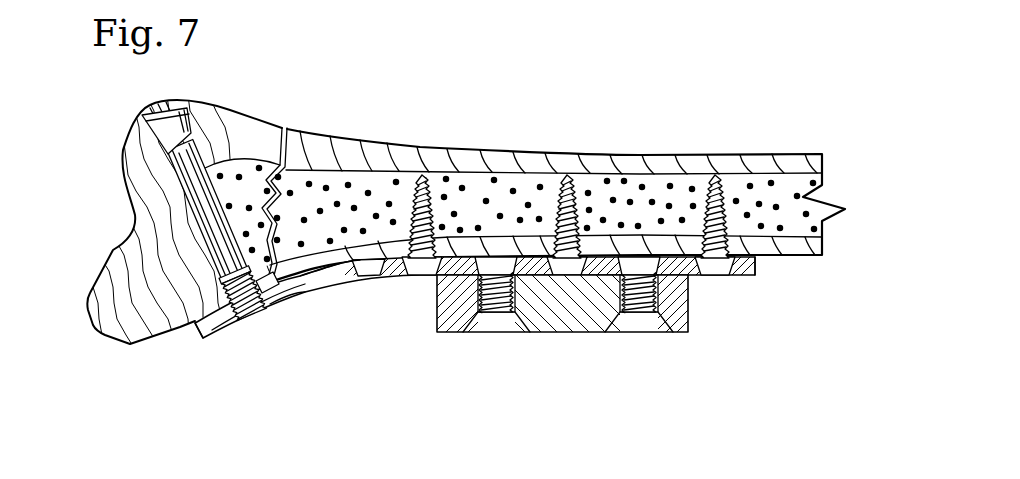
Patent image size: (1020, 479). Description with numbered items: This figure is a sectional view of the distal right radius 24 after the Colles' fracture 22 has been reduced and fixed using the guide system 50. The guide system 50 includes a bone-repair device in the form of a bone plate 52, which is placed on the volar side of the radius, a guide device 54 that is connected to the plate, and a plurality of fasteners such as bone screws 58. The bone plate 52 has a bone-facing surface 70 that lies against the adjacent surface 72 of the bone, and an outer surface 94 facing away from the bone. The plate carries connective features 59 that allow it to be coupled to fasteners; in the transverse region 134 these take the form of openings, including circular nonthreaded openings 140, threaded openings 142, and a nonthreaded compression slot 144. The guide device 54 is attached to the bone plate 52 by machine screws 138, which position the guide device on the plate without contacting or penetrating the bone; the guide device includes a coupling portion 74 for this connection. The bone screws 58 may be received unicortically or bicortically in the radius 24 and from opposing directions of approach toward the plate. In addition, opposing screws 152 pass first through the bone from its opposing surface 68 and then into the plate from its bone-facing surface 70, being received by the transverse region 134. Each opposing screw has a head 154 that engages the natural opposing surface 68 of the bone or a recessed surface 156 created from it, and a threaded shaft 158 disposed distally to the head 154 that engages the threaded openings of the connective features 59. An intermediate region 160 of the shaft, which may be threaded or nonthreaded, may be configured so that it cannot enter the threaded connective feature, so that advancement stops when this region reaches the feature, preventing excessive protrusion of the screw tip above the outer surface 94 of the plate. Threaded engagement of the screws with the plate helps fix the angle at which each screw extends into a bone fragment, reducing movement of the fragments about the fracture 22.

The Colles' fracture 22 is at (275, 219).
The distal radius 24 is at (568, 149).
The guide system 50 is at (409, 256).
The bone plate 52 is at (356, 303).
The guide device 54 is at (566, 320).
The bone screws 58 is at (553, 190).
The connective features 59 is at (245, 318).
The opposing surface of the bone 68 is at (222, 105).
The bone-facing surface of the bone-repair device 70 is at (264, 288).
The adjacent surface of the bone 72 is at (150, 344).
The coupling portion 74 is at (693, 326).
The outer surface of the bone-repair device 94 is at (281, 308).
The transverse region 134 is at (217, 340).
The machine screws 138 is at (493, 333).
The circular nonthreaded openings 140 is at (327, 283).
The threaded openings 142 is at (648, 273).
The compression slot 144 is at (370, 268).
The opposing screws 152 is at (172, 194).
The head of the opposing screw 154 is at (163, 142).
The recessed surface 156 is at (181, 122).
The threaded shaft 158 is at (220, 298).
The intermediate region of the shaft 160 is at (207, 217).